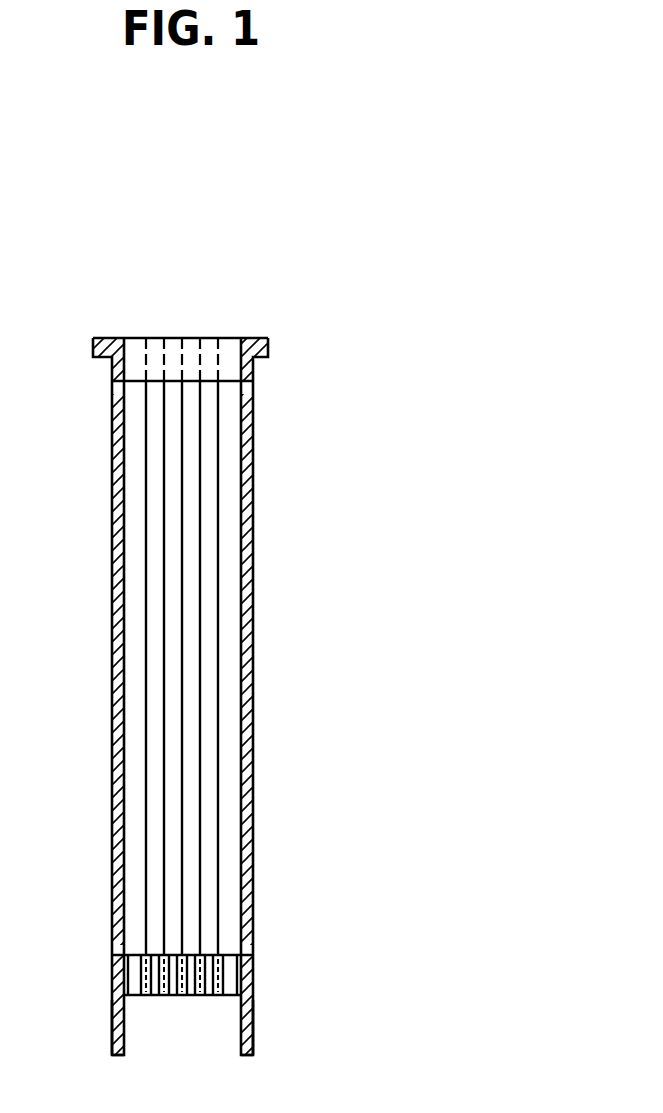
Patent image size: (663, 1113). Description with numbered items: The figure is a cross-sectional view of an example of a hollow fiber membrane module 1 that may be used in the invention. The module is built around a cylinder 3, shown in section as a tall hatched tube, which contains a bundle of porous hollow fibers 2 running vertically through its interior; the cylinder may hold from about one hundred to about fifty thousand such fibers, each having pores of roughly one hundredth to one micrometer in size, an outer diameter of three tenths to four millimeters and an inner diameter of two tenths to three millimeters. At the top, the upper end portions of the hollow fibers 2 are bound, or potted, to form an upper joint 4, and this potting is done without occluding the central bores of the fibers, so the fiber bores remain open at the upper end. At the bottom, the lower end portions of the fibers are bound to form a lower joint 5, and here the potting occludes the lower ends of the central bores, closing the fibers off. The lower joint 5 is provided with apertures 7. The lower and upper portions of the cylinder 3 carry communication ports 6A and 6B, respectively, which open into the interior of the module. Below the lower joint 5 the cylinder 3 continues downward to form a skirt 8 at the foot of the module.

The hollow fiber membrane module 1 is at (253, 684).
The porous hollow fibers 2 is at (217, 500).
The cylinder 3 is at (253, 811).
The upper joint 4 is at (194, 345).
The lower joint 5 is at (255, 978).
The communication port 6A is at (253, 950).
The communication port 6B is at (253, 386).
The apertures 7 is at (193, 997).
The skirt 8 is at (112, 1033).